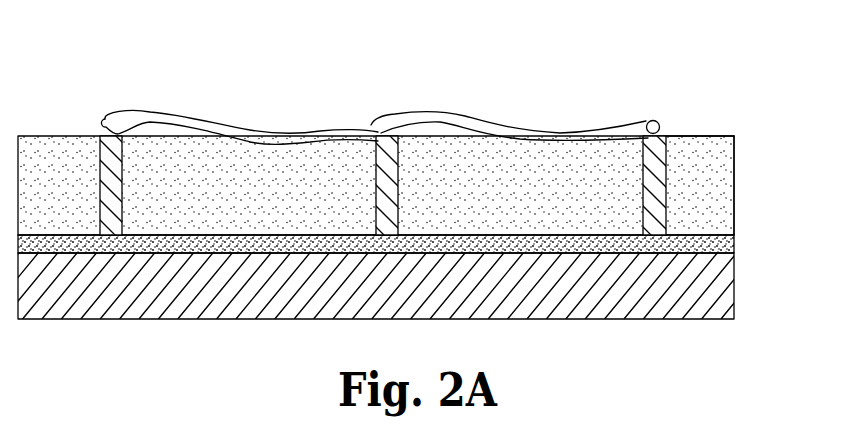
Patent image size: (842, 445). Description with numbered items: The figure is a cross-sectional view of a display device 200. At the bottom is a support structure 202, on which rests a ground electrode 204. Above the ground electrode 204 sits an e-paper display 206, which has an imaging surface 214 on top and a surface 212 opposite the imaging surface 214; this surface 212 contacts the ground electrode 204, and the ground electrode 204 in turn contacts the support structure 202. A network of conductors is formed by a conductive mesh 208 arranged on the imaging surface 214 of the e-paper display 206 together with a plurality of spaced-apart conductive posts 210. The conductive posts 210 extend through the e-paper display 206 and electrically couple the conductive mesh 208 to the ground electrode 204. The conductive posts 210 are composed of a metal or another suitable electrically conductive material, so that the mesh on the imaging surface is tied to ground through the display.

The display device 200 is at (458, 32).
The support structure 202 is at (722, 290).
The ground electrode 204 is at (733, 251).
The e-paper display 206 is at (518, 203).
The conductive mesh 208 is at (452, 112).
The conductive posts 210 is at (108, 170).
The surface opposite imaging surface 212 is at (712, 237).
The imaging surface 214 is at (708, 137).